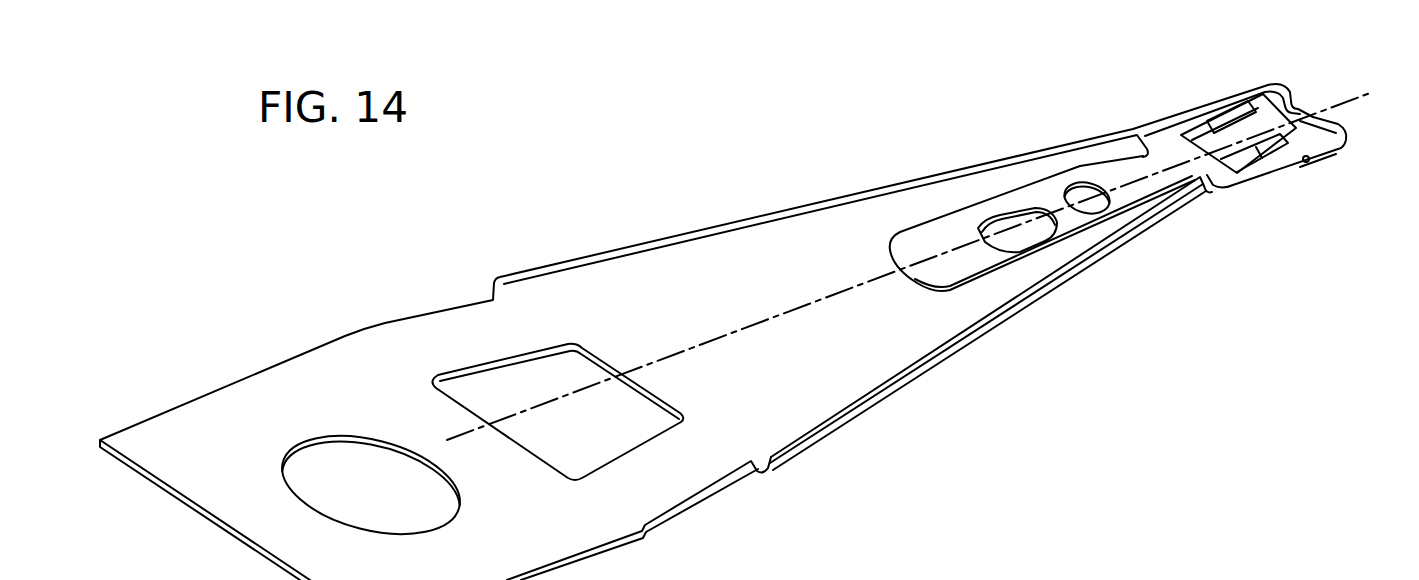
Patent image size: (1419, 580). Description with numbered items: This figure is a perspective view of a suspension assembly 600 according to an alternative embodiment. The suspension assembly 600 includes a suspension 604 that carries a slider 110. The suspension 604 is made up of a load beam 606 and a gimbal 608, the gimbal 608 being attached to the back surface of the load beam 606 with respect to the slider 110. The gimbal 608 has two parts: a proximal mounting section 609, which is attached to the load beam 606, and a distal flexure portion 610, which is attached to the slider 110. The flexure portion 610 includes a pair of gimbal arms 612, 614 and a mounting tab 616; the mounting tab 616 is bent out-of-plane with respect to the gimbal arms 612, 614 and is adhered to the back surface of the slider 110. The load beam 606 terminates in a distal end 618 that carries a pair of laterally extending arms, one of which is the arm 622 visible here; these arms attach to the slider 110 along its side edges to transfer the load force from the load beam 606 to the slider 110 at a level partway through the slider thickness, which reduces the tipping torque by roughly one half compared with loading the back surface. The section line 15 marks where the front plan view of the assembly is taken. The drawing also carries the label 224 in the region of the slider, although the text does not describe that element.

The suspension assembly 600 is at (1175, 313).
The suspension 604 is at (1082, 290).
The load beam 606 is at (921, 168).
The gimbal 608 is at (1112, 153).
The proximal mounting section 609 is at (1045, 203).
The distal flexure portion 610 is at (1208, 92).
The gimbal arm 612 is at (1236, 95).
The gimbal arm 614 is at (1258, 168).
The mounting tab 616 is at (1305, 110).
The distal end 618 is at (1220, 138).
The laterally extending arm 622 is at (1310, 166).
The slider 110 is at (1303, 164).
The lift tab 224 is at (1334, 153).
The section line 15- 15 is at (1306, 46).